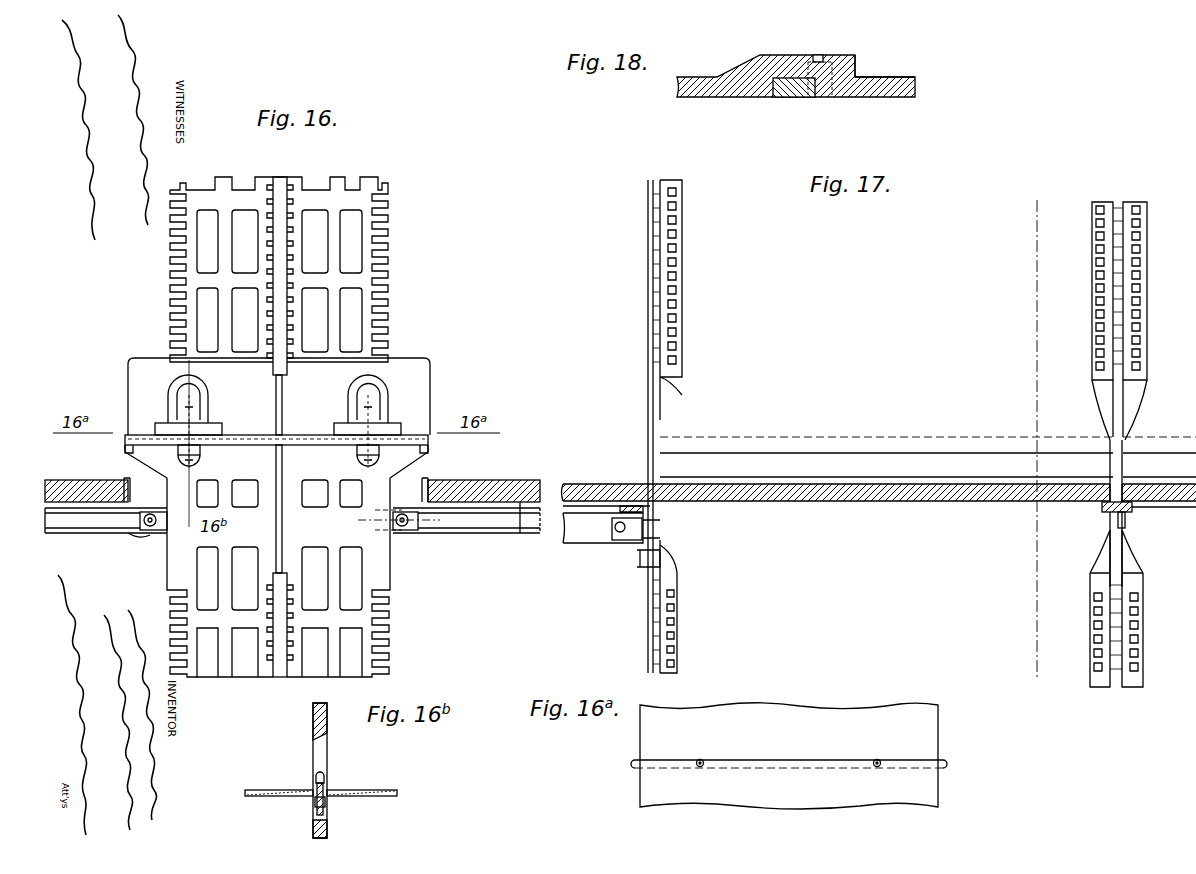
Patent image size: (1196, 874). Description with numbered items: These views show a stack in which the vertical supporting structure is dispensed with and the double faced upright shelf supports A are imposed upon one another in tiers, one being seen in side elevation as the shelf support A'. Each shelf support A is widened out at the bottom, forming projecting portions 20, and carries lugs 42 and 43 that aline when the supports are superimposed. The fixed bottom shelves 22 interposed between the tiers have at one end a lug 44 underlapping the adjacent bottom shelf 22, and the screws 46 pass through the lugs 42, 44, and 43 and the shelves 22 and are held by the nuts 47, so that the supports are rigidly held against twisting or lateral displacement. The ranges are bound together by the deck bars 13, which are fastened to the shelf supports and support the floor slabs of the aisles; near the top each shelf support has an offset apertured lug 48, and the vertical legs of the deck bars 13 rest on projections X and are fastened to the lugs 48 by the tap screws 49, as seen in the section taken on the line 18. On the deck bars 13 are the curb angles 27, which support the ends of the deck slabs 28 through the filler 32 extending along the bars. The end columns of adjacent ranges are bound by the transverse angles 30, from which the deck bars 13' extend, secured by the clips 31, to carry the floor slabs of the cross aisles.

In FIG. 16, the deck bar 13 is at (292, 534).
In FIG. 17, the deck bar 13 is at (1086, 509).
In FIG. 18, the deck bar 13 is at (885, 99).
In FIG. 17, the deck bar 13' is at (599, 541).
In FIG. 16, the section line 18 is at (395, 524).
In FIG. 16, the projecting portion 20 is at (136, 365).
In FIG. 16, the fixed bottom shelf 22 is at (301, 435).
In FIG. 16A, the fixed bottom shelf 22 is at (789, 756).
In FIG. 16B, the fixed bottom shelf 22 is at (383, 808).
In FIG. 17, the fixed bottom shelf 22 is at (880, 436).
In FIG. 16, the curb angle 27 is at (130, 489).
In FIG. 17, the curb angle 27 is at (797, 503).
In FIG. 16, the deck slab 28 is at (84, 482).
In FIG. 17, the angle 30 is at (655, 525).
In FIG. 17, the clip 31 is at (622, 541).
In FIG. 16, the filler 32 is at (517, 535).
In FIG. 16, the lug 42 is at (165, 420).
In FIG. 17, the lug 42 is at (1110, 424).
In FIG. 16, the lug 43 is at (200, 451).
In FIG. 16A, the lug 44 is at (697, 760).
In FIG. 16B, the lug 44 is at (326, 800).
In FIG. 16, the screw 46 is at (192, 414).
In FIG. 16A, the screw 46 is at (701, 758).
In FIG. 16B, the screw 46 is at (326, 783).
In FIG. 16, the nut 47 is at (186, 466).
In FIG. 16, the offset apertured lug 48 is at (405, 527).
In FIG. 17, the offset apertured lug 48 is at (1128, 520).
In FIG. 18, the offset apertured lug 48 is at (857, 66).
In FIG. 16, the tap screw 49 is at (406, 528).
In FIG. 17, the tap screw 49 is at (1126, 522).
In FIG. 18, the tap screw 49 is at (812, 55).
In FIG. 16, the shelf support A is at (271, 427).
In FIG. 16A, the shelf support A is at (805, 763).
In FIG. 16B, the shelf support A is at (332, 773).
In FIG. 17, the shelf support A is at (1099, 444).
In FIG. 18, the shelf support A is at (796, 92).
In FIG. 17, the shelf support A' is at (671, 426).
In FIG. 16, the projection X is at (148, 537).
In FIG. 18, the projection X is at (805, 97).